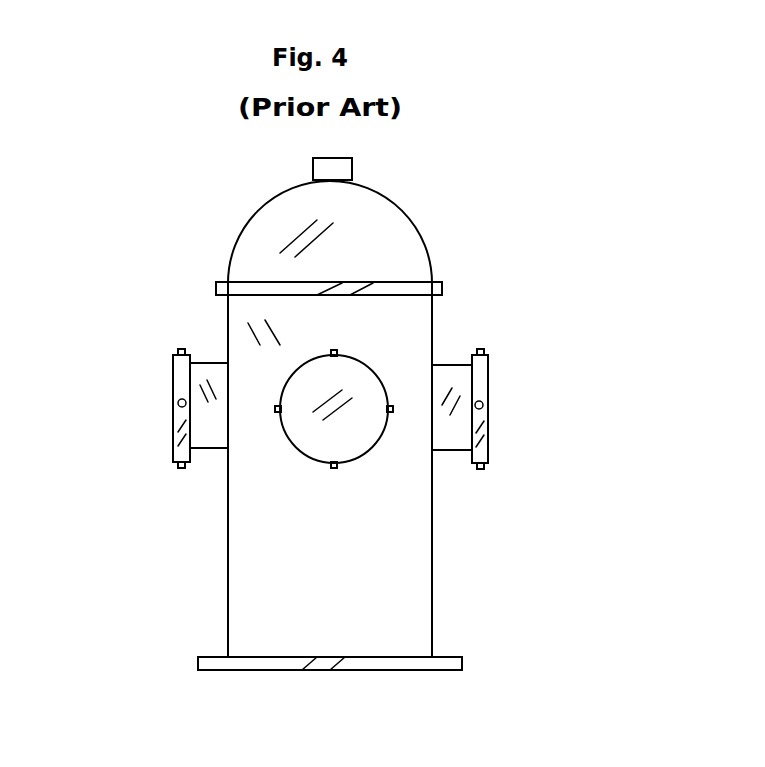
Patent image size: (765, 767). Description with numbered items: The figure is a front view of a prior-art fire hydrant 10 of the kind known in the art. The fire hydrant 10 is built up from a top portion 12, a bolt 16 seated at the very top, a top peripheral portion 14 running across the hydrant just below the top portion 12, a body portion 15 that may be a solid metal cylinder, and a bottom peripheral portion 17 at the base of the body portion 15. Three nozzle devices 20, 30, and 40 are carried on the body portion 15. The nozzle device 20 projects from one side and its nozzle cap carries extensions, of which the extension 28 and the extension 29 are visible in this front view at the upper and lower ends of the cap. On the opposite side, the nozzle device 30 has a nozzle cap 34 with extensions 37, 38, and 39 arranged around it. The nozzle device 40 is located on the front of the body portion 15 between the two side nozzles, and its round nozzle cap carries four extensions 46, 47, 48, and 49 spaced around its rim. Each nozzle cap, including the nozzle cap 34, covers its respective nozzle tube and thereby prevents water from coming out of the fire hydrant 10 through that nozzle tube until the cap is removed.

The fire hydrant 10 is at (454, 242).
The top portion 12 is at (365, 215).
The top peripheral portion 14 is at (432, 287).
The body portion 15 is at (397, 577).
The bolt 16 is at (325, 163).
The bottom peripheral portion 17 is at (377, 658).
The nozzle device 20 is at (205, 345).
The extension 28 is at (177, 350).
The extension 29 is at (177, 467).
The nozzle device 30 is at (462, 348).
The nozzle cap 34 is at (487, 388).
The extension 37 is at (488, 404).
The extension 38 is at (482, 352).
The extension 39 is at (481, 468).
The nozzle device 40 is at (285, 467).
The extension 46 is at (276, 407).
The extension 47 is at (391, 408).
The extension 48 is at (335, 352).
The extension 49 is at (334, 472).